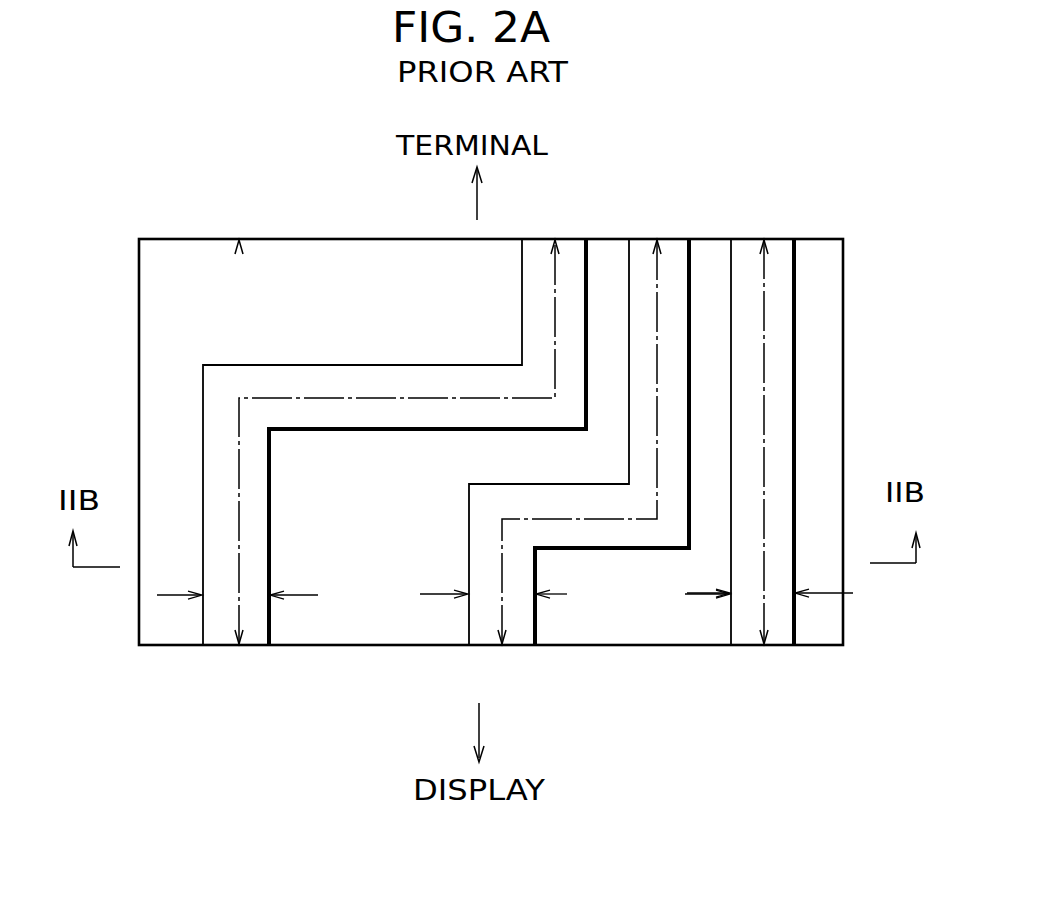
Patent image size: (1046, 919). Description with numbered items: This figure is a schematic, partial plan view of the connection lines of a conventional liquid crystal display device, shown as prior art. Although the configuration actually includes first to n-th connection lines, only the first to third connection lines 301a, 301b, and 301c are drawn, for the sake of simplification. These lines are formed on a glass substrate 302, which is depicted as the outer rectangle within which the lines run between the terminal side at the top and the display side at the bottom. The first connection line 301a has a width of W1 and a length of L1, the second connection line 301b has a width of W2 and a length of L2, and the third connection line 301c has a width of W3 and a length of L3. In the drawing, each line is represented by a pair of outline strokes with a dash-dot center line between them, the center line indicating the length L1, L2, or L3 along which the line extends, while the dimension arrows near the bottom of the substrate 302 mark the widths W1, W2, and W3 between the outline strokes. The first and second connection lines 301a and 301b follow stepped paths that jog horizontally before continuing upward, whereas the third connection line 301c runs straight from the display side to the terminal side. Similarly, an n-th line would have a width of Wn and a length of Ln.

The glass substrate 302 is at (166, 637).
The first connection line 301a is at (394, 473).
The second connection line 301b is at (579, 472).
The third connection line 301c is at (815, 471).
The length of first line L1 is at (342, 400).
The length of second line L2 is at (623, 520).
The length of third line L3 is at (765, 382).
The width of first line W1 is at (261, 598).
The width of second line W2 is at (575, 597).
The width of third line W3 is at (798, 594).